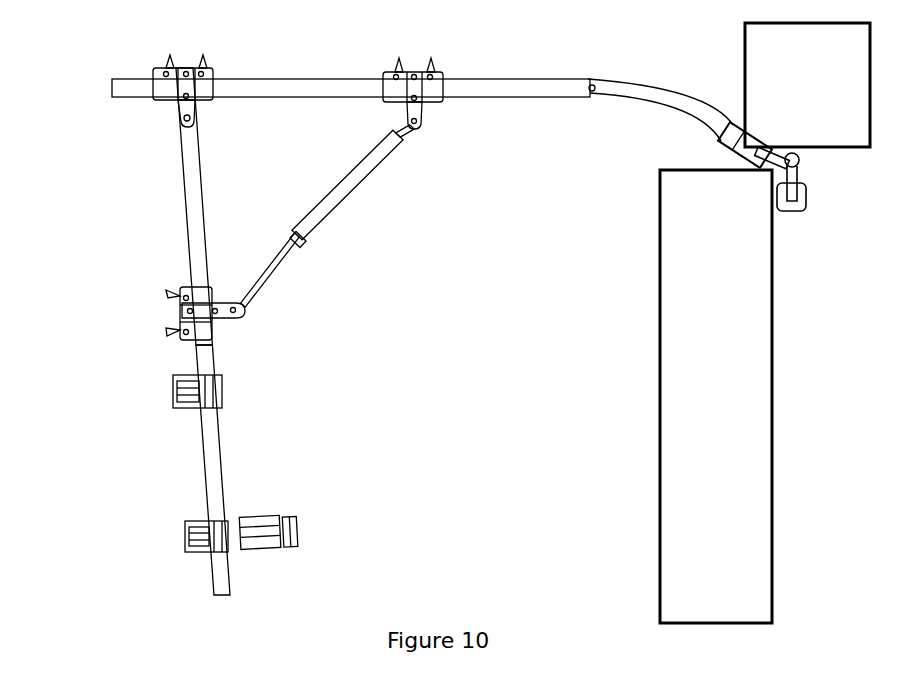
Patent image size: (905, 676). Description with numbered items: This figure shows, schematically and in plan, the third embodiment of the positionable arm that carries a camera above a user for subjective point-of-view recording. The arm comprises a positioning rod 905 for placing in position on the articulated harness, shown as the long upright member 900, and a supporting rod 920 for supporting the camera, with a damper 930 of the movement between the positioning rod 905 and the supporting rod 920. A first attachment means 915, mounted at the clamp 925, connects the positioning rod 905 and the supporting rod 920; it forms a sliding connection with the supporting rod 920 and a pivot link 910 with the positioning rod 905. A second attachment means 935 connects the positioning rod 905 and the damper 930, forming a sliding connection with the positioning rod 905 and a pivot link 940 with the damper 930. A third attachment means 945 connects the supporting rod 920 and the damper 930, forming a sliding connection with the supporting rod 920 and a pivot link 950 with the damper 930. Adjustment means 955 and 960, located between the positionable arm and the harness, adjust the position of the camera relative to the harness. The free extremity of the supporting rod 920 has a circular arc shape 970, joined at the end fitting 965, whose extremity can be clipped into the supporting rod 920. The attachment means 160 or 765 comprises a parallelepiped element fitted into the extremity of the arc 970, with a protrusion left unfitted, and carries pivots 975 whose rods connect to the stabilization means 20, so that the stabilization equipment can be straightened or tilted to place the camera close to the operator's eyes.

The stabilization means 20 is at (800, 198).
The attachment means 160 is at (788, 130).
The attachment means 765 is at (740, 140).
The vertical pole 900 is at (193, 218).
The positioning rod 905 is at (215, 477).
The pivot link 910 is at (191, 118).
The first attachment means 915 is at (175, 99).
The supporting rod 920 is at (313, 92).
The clamp 925 is at (165, 79).
The damper 930 is at (350, 193).
The second attachment means 935 is at (240, 312).
The pivot link 940 is at (167, 302).
The third attachment means 945 is at (432, 85).
The pivot link 950 is at (421, 122).
The adjustment means 955 is at (225, 392).
The adjustment means 960 is at (297, 525).
The cable end fitting 965 is at (590, 92).
The circular arc 970 is at (688, 105).
The pivot 975 is at (796, 156).